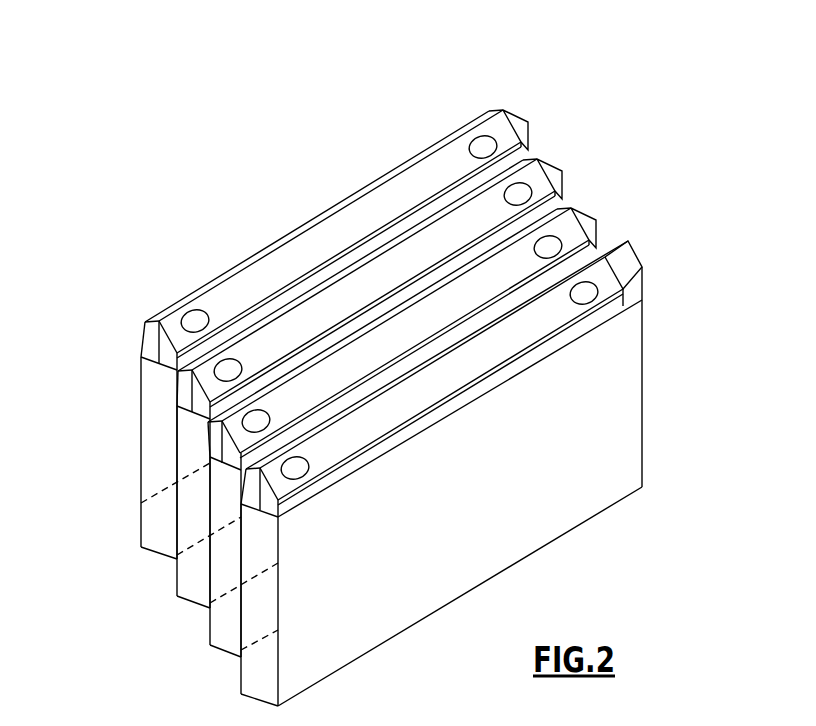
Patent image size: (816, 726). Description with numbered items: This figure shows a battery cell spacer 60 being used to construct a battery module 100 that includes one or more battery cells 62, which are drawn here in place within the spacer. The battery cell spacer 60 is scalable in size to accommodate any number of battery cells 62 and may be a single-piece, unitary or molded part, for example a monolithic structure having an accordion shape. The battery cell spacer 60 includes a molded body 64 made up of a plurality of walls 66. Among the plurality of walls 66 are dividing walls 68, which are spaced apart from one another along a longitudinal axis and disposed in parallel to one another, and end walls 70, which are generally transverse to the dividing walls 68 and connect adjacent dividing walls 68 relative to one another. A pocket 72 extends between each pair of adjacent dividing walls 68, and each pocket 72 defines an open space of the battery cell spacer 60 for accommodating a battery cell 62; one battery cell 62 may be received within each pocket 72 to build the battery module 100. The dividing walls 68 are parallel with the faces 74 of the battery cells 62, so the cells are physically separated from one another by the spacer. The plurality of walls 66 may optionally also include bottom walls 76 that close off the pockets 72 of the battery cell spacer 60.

The battery module 100 is at (383, 367).
The battery cell spacer 60 is at (618, 192).
The battery cells 62 is at (397, 396).
The molded body 64 is at (113, 446).
The plurality of walls 66 is at (648, 337).
The dividing walls 68 is at (253, 336).
The end walls 70 is at (158, 458).
The pocket 72 is at (556, 170).
The faces 74 is at (427, 210).
The bottom walls 76 is at (460, 598).